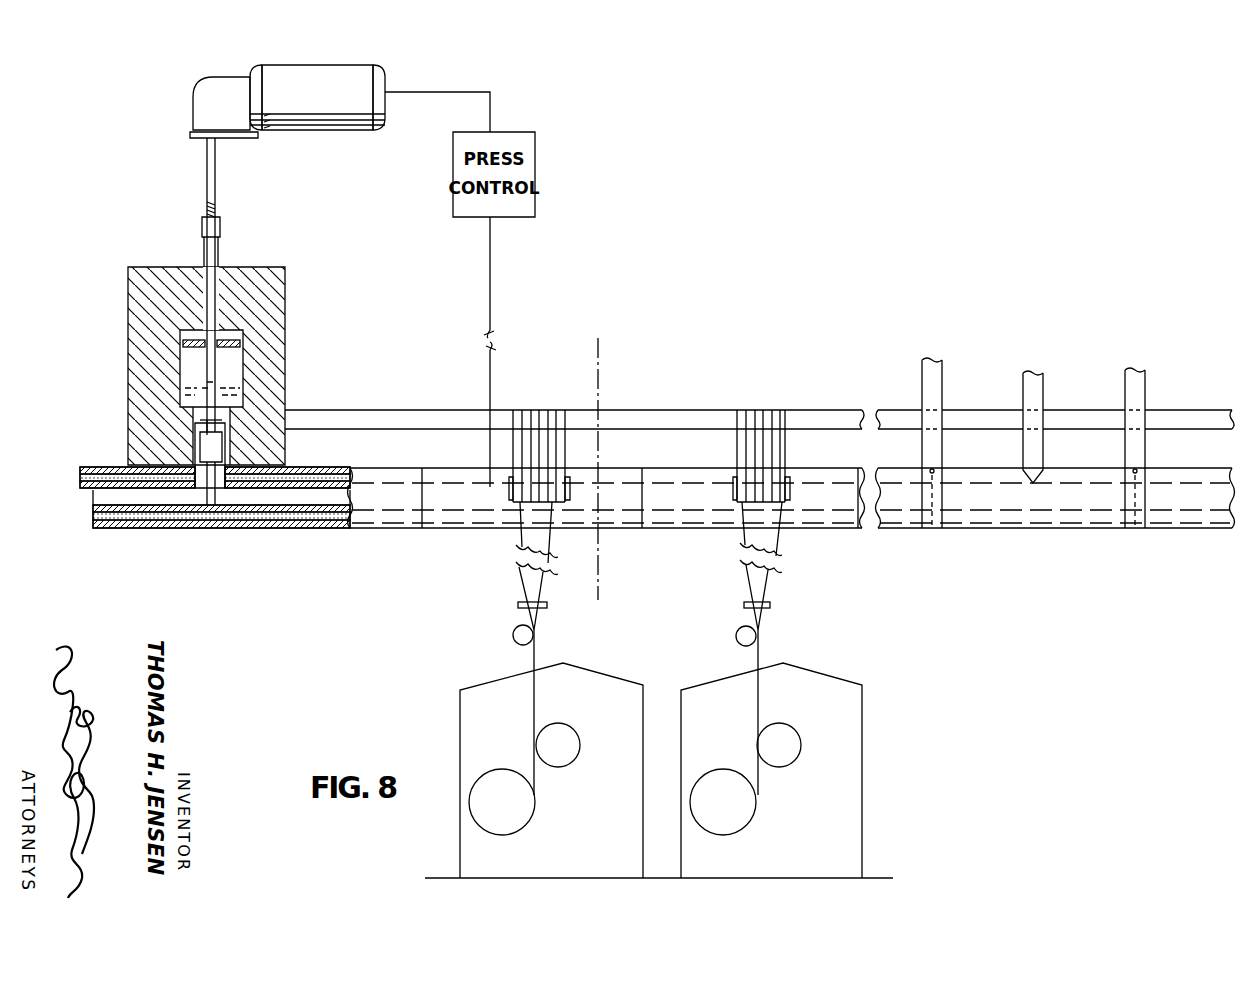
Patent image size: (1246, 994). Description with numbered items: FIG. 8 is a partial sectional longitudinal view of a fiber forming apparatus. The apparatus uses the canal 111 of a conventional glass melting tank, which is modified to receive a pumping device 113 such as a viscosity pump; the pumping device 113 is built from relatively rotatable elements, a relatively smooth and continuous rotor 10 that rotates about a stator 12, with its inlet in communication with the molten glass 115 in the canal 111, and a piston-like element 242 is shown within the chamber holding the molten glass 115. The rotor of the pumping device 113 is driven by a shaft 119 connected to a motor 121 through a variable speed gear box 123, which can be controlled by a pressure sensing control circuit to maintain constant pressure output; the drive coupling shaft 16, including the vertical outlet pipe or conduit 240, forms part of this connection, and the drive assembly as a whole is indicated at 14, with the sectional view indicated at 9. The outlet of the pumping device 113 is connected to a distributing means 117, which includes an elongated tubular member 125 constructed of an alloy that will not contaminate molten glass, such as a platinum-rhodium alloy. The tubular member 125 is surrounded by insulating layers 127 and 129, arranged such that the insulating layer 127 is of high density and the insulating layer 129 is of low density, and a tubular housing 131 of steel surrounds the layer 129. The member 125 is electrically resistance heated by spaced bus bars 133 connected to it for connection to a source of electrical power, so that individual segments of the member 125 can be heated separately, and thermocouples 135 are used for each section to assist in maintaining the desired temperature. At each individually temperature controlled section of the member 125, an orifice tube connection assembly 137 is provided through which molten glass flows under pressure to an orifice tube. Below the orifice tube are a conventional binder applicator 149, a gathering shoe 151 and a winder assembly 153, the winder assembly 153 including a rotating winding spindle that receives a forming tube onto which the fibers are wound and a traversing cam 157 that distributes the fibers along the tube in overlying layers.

The fluid cylinder assembly 14 is at (296, 46).
The motor 121 is at (318, 102).
The variable speed gear box 123 is at (193, 92).
The shaft 119 is at (207, 206).
The drive coupling shaft 16 is at (150, 224).
The vertical outlet pipe 240 is at (204, 250).
The canal 111 is at (286, 360).
The molten glass 115 is at (210, 374).
The piston 242 is at (200, 340).
The pumping device 113 is at (196, 444).
The stator 12 is at (224, 447).
The rotor 10 is at (226, 440).
The insulating layer 127 is at (84, 496).
The insulating layer 129 is at (80, 475).
The tubular housing 131 is at (114, 465).
The elongated tubular member 125 is at (240, 496).
The distributing means 117 is at (395, 534).
The section line 9 is at (578, 340).
The orifice tube connection assembly 137 is at (516, 504).
The binder applicator 149 is at (518, 606).
The gathering shoe 151 is at (513, 638).
The traversing cam 157 is at (580, 748).
The winder assembly 153 is at (528, 815).
The bus bars 133 is at (942, 443).
The thermocouples 135 is at (1043, 450).